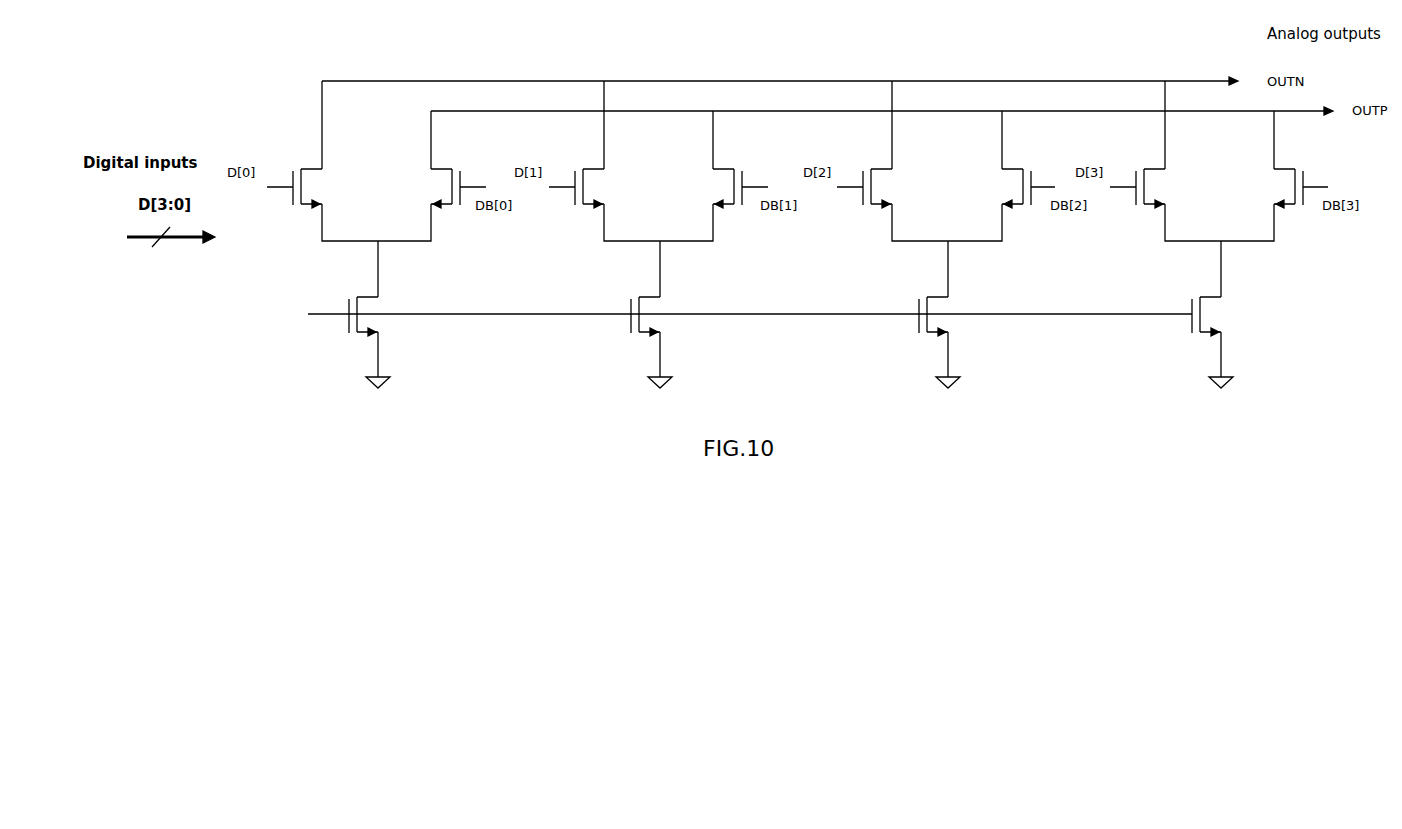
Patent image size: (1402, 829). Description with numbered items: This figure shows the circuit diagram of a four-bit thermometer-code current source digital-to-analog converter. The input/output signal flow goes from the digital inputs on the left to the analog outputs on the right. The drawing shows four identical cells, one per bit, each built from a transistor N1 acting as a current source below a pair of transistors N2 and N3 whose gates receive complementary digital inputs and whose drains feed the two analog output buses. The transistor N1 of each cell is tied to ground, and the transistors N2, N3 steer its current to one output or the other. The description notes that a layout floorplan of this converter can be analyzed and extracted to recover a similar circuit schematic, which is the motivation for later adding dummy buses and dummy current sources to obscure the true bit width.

The tail current source transistor N1 is at (352, 339).
The first differential pair transistor N2 is at (303, 188).
The second differential pair transistor N3 is at (449, 188).